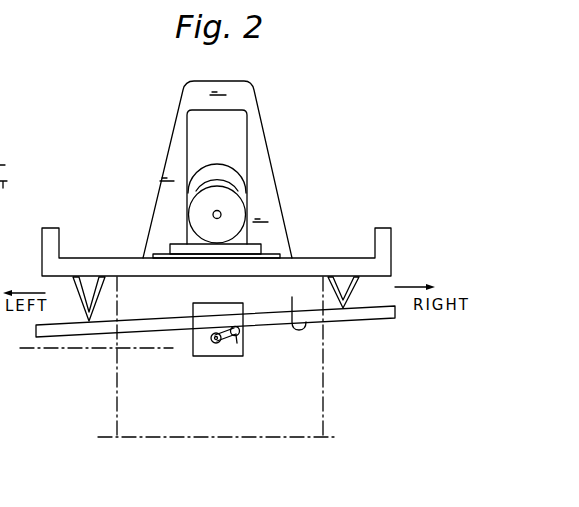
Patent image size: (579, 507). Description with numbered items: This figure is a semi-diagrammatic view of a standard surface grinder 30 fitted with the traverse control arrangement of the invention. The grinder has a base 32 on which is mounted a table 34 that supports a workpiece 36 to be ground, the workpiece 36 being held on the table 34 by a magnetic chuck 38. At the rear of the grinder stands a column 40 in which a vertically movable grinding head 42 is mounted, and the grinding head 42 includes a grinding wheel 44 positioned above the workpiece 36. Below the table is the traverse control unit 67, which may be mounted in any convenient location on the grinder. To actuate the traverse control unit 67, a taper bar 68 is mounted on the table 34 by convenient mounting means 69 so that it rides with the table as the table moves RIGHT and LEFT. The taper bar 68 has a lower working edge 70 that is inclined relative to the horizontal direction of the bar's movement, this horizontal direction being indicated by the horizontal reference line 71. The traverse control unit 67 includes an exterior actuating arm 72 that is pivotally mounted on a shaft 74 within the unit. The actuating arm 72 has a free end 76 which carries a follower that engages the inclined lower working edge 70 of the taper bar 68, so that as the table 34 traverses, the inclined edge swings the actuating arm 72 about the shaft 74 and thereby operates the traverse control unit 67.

The surface grinder 30 is at (319, 119).
The base 32 is at (109, 388).
The table 34 is at (391, 248).
The workpiece 36 is at (260, 241).
The magnetic chuck 38 is at (272, 254).
The column 40 is at (183, 93).
The grinding head 42 is at (202, 168).
The grinding wheel 44 is at (197, 213).
The traverse control unit 67 is at (243, 367).
The taper bar 68 is at (358, 324).
The mounting means 69 is at (365, 287).
The lower working edge 70 is at (284, 304).
The horizontal reference line 71 is at (46, 349).
The actuating arm 72 is at (228, 343).
The shaft 74 is at (212, 343).
The free end 76 is at (235, 326).